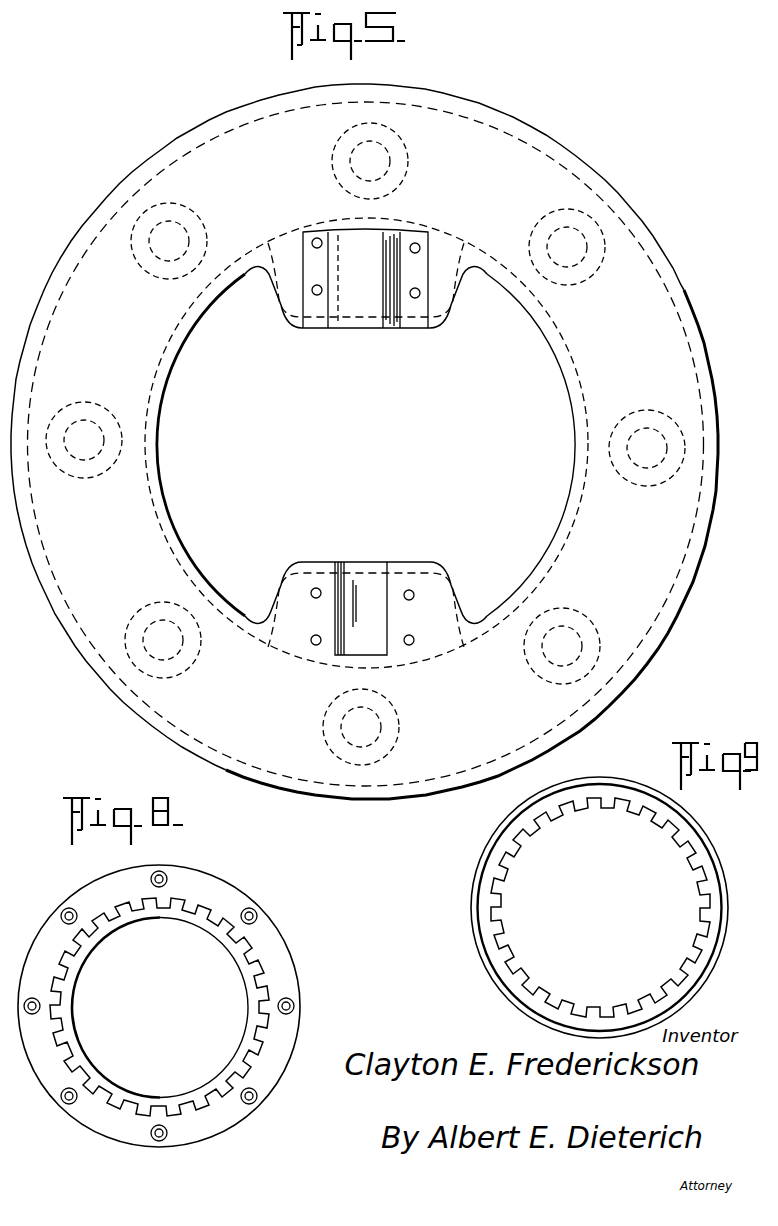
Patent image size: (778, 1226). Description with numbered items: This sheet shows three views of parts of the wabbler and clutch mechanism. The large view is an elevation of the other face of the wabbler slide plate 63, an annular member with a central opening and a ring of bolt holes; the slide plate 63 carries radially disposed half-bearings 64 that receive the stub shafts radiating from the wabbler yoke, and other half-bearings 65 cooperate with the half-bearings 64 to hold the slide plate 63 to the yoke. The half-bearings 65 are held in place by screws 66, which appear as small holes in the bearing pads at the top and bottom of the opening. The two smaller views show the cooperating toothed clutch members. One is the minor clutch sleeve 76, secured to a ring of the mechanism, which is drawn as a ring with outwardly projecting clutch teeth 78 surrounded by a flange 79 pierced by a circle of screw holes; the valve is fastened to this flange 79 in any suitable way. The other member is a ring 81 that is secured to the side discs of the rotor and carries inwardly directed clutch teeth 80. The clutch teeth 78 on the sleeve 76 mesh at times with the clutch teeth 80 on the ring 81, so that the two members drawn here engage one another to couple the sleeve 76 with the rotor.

In FIG. 5, the slide plate 63 is at (628, 247).
In FIG. 5, the half-bearings 64 is at (376, 615).
In FIG. 5, the half-bearings 65 is at (370, 248).
In FIG. 5, the screws 66 is at (317, 238).
In FIG. 8, the minor clutch sleeve 76 is at (256, 992).
In FIG. 8, the clutch teeth 78 is at (260, 960).
In FIG. 8, the flange 79 is at (278, 948).
In FIG. 9, the clutch teeth 80 is at (524, 823).
In FIG. 9, the ring 81 is at (710, 853).